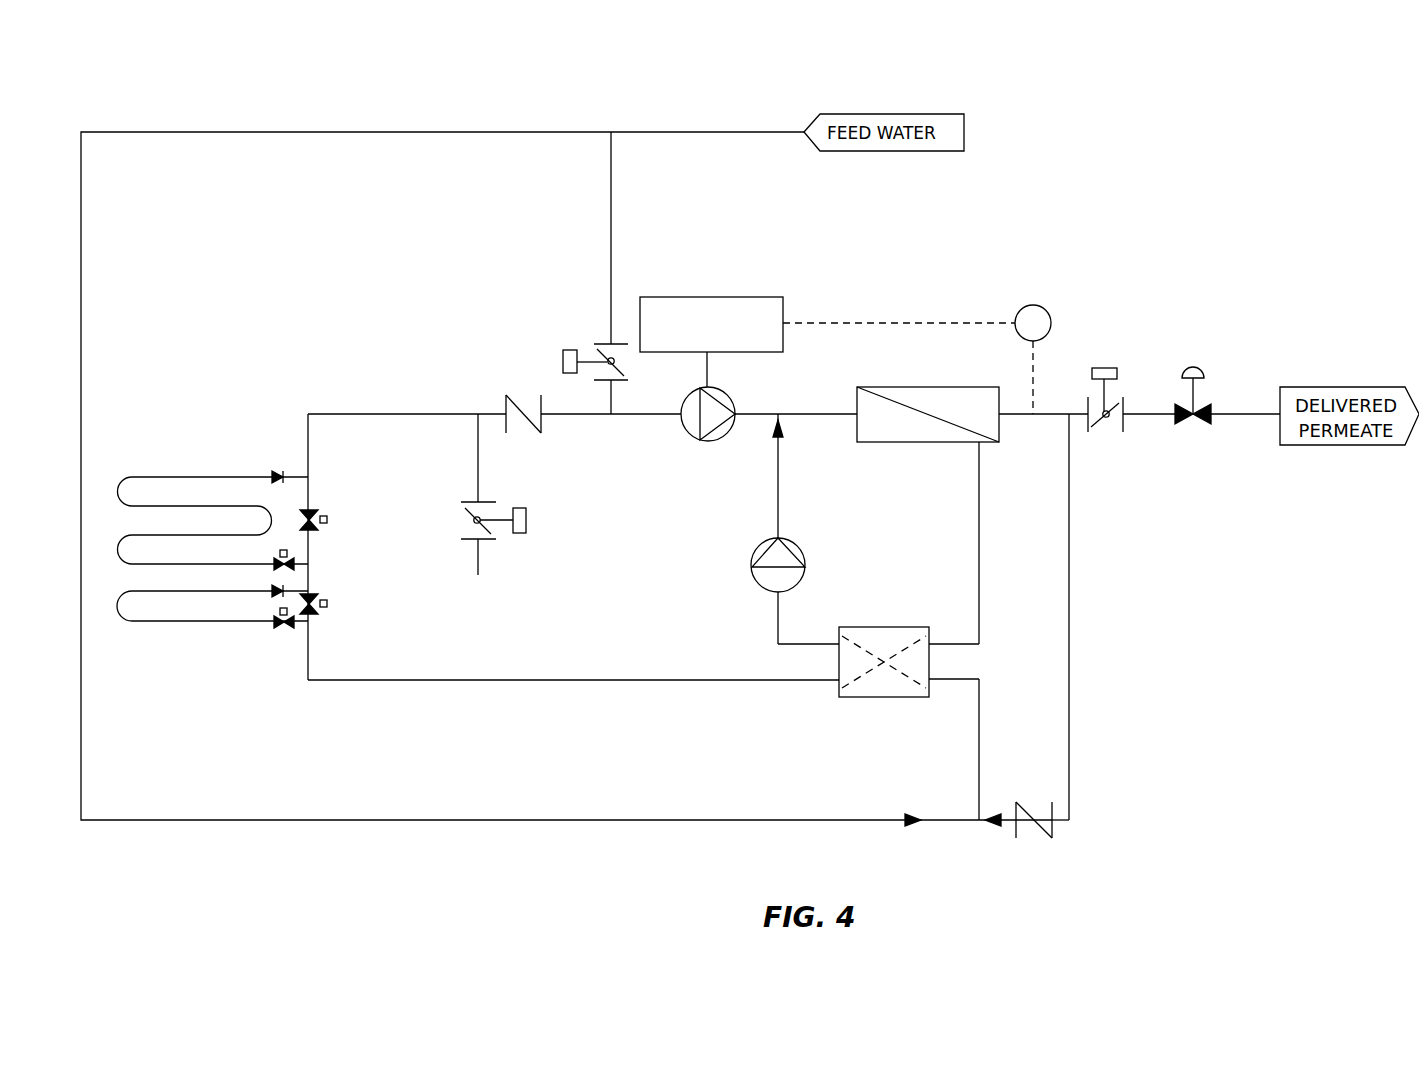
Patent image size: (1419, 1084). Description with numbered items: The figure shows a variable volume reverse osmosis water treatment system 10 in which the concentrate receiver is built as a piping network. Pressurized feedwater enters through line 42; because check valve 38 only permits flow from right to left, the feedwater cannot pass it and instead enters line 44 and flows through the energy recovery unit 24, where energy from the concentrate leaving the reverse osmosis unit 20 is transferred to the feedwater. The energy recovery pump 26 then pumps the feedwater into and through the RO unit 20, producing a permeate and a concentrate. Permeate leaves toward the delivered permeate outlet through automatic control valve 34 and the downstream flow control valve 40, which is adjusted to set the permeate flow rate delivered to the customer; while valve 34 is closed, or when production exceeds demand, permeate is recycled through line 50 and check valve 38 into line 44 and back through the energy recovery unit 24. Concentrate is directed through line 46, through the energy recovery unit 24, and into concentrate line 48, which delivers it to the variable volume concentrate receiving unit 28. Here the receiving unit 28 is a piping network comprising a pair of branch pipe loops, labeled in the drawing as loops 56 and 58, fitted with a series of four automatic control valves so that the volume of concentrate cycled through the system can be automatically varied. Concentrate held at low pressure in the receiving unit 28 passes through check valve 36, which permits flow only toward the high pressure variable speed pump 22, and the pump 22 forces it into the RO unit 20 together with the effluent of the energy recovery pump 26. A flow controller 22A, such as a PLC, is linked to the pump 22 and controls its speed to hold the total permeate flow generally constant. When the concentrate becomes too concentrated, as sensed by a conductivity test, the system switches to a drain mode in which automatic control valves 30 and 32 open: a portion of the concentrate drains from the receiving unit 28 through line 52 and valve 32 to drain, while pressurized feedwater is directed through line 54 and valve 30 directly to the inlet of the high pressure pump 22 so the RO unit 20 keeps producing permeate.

The water treatment system 10 is at (1078, 148).
The reverse osmosis unit 20 is at (979, 386).
The high pressure variable speed pump 22 is at (720, 394).
The flow controller 22A is at (1050, 312).
The energy recovery unit 24 is at (882, 698).
The energy recovery pump 26 is at (793, 542).
The variable volume concentrate receiving unit 28 is at (235, 536).
The automatic control valve 30 is at (562, 361).
The automatic control valve 32 is at (527, 519).
The automatic control valve 34 is at (1107, 368).
The check valve 36 is at (526, 425).
The check valve 38 is at (1034, 822).
The flow control valve 40 is at (1204, 372).
The line 42 is at (453, 130).
The line 44 is at (978, 772).
The line 46 is at (978, 537).
The concentrate line 48 is at (577, 679).
The line 50 is at (1070, 606).
The line 52 is at (476, 484).
The line 54 is at (612, 243).
The lower coil 56 is at (205, 623).
The upper coil 58 is at (205, 476).